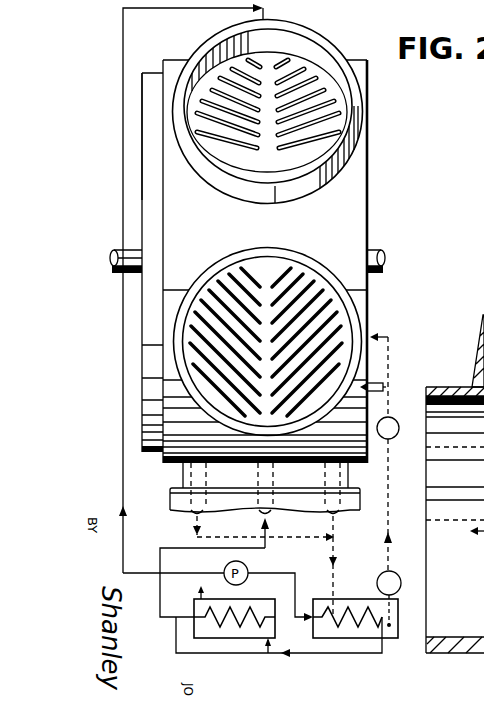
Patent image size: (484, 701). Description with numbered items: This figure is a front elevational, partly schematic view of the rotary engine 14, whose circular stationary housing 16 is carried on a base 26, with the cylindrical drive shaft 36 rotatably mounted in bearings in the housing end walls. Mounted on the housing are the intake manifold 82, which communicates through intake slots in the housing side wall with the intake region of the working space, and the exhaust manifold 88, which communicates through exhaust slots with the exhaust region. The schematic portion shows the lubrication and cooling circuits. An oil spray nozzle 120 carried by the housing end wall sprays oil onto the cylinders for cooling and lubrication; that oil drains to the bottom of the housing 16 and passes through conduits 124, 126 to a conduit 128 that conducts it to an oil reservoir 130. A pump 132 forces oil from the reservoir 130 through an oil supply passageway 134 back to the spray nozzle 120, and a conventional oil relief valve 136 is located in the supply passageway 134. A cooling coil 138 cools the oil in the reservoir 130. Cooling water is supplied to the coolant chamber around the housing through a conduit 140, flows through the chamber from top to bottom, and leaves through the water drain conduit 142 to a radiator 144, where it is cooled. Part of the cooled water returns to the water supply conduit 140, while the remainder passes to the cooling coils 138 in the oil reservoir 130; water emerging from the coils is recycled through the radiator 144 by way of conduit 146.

The rotary engine 14 is at (104, 196).
The stationary housing 16 is at (370, 160).
The base 26 is at (182, 478).
The drive shaft 36 is at (375, 250).
The intake manifold 82 is at (326, 44).
The exhaust manifold 88 is at (320, 268).
The oil spray nozzle 120 is at (376, 384).
The conduit 124 is at (332, 527).
The conduit 126 is at (195, 535).
The conduit 128 is at (333, 553).
The oil reservoir 130 is at (395, 638).
The pump 132 is at (377, 582).
The oil supply passageway 134 is at (388, 478).
The oil relief valve 136 is at (393, 418).
The cooling coil 138 is at (357, 630).
The water supply conduit 140 is at (122, 315).
The water drain conduit 142 is at (265, 545).
The radiator 144 is at (194, 607).
The conduit 146 is at (257, 653).